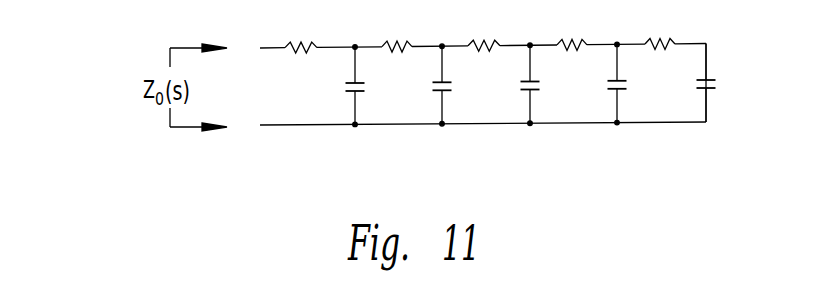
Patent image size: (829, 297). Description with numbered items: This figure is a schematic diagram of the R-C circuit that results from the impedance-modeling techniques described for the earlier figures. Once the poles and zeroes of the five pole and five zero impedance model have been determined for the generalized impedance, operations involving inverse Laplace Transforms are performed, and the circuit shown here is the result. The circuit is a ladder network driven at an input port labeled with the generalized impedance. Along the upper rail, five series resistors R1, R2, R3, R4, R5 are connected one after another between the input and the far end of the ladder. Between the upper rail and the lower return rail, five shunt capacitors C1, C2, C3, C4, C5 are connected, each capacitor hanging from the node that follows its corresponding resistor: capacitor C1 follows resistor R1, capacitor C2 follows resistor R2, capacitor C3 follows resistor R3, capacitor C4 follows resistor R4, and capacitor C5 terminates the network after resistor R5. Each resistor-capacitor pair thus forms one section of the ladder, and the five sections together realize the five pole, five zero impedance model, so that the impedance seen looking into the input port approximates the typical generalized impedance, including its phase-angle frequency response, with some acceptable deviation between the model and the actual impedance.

The series resistor R1 is at (301, 33).
The series resistor R2 is at (397, 32).
The series resistor R3 is at (484, 31).
The series resistor R4 is at (572, 30).
The series resistor R5 is at (660, 30).
The shunt capacitor C1 is at (371, 85).
The shunt capacitor C2 is at (458, 85).
The shunt capacitor C3 is at (546, 84).
The shunt capacitor C4 is at (633, 83).
The shunt capacitor C5 is at (722, 83).